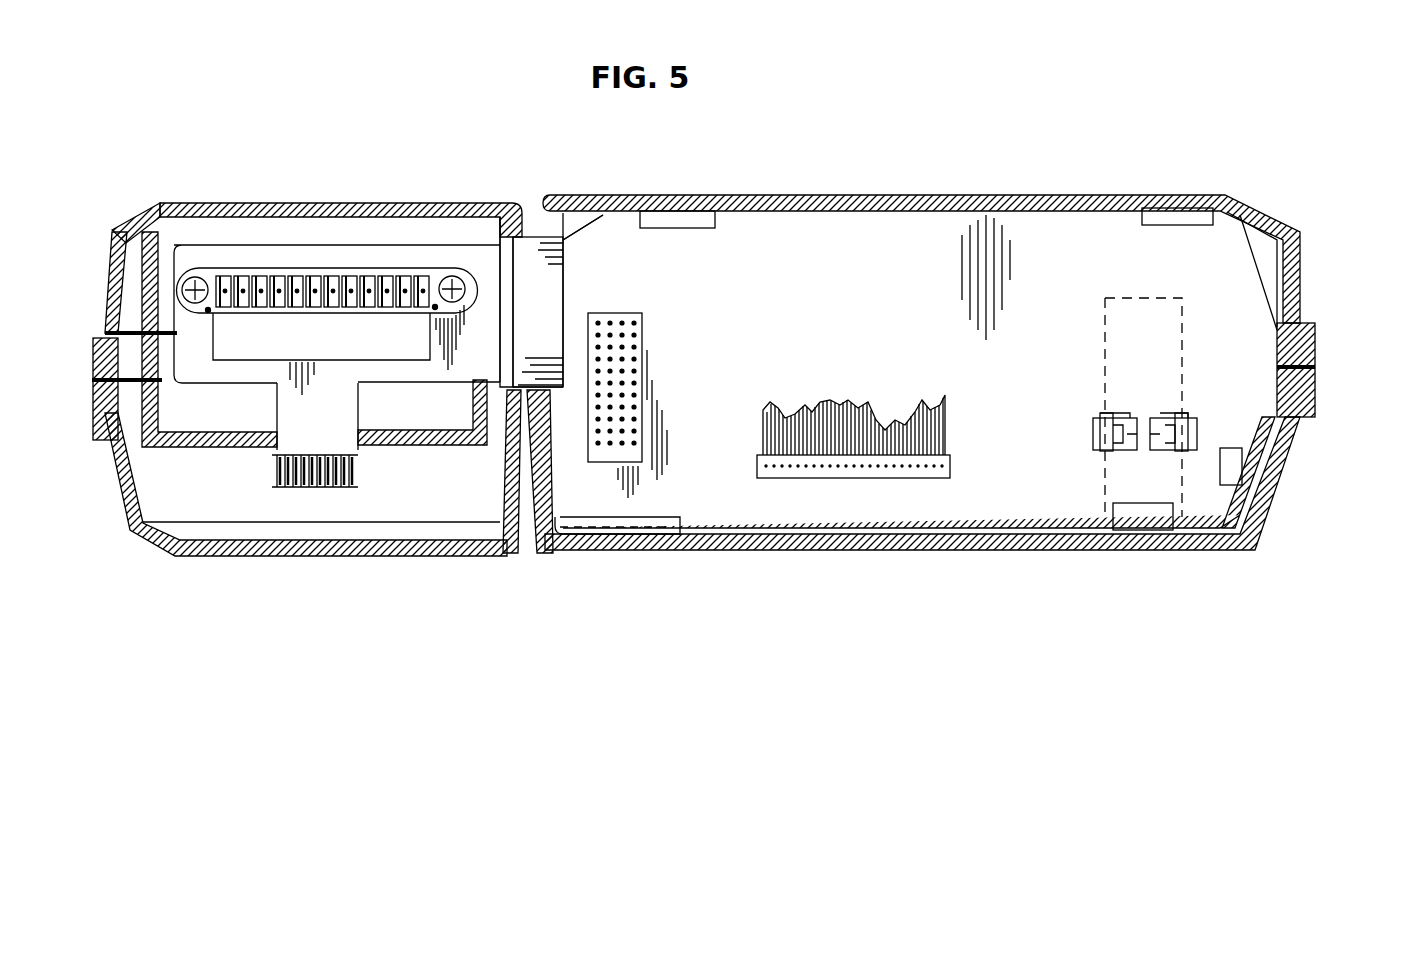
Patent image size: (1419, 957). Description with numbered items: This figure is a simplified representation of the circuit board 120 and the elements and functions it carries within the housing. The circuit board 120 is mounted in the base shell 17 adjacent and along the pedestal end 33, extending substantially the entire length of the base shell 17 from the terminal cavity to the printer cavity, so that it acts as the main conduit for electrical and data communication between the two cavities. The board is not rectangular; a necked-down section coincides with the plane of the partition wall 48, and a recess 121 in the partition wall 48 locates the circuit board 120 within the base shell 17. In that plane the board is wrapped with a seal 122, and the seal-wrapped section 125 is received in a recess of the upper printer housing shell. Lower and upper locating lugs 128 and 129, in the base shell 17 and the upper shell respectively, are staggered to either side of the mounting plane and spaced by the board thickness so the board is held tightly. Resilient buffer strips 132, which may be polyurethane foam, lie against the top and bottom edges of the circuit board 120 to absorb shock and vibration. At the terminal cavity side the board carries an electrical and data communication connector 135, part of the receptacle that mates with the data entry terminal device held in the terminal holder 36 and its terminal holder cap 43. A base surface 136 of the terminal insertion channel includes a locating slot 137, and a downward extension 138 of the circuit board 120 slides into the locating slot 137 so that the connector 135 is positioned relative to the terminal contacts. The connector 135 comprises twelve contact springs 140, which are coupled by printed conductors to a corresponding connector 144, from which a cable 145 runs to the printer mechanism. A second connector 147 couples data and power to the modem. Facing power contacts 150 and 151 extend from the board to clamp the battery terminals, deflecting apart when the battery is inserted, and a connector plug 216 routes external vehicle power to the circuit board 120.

The base shell 17 is at (177, 556).
The pedestal end 33 is at (1190, 195).
The terminal holder 36 is at (92, 360).
The terminal holder cap 43 is at (125, 228).
The partition wall 48 is at (527, 555).
The circuit board 120 is at (1072, 222).
The recess 121 is at (500, 395).
The seal 122 is at (533, 237).
The seal-wrapped section 125 is at (545, 283).
The lower locating lug 128 is at (655, 520).
The upper locating lug 129 is at (697, 212).
The buffer strip 132 is at (888, 212).
The electrical and data communication connector 135 is at (222, 270).
The base surface 136 is at (197, 450).
The locating slot 137 is at (362, 450).
The downward extension 138 is at (290, 405).
The contact springs 140 is at (303, 272).
The electrical and data communication connector 144 is at (950, 465).
The cable 145 is at (947, 402).
The second connector 147 is at (645, 350).
The power contact 150 is at (1187, 420).
The power contact 151 is at (1093, 422).
The connector plug 216 is at (1245, 470).